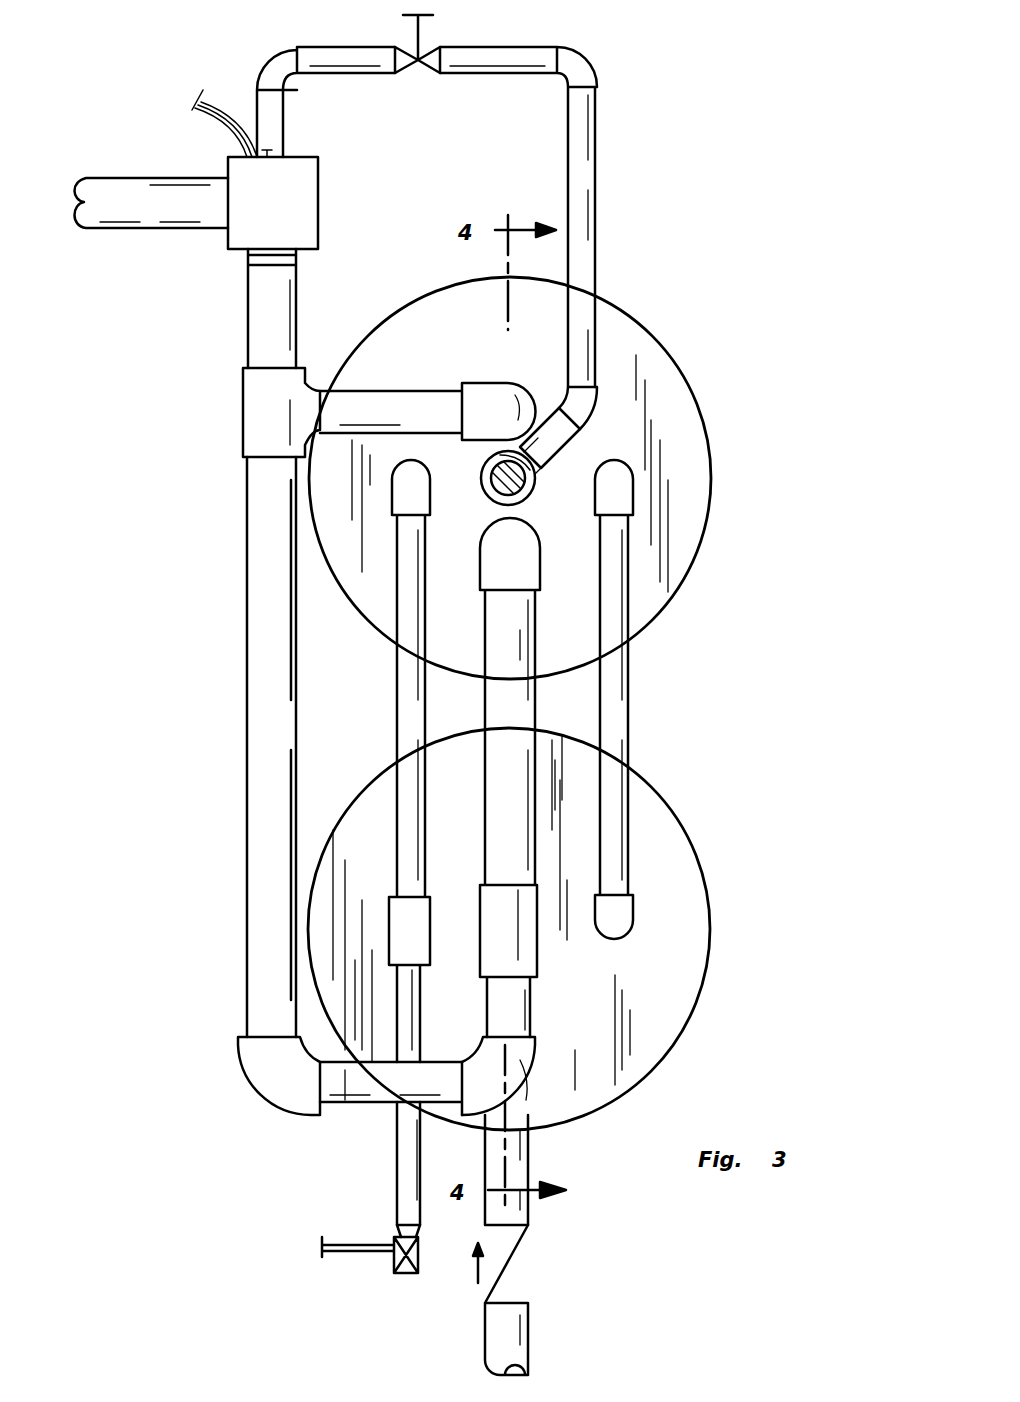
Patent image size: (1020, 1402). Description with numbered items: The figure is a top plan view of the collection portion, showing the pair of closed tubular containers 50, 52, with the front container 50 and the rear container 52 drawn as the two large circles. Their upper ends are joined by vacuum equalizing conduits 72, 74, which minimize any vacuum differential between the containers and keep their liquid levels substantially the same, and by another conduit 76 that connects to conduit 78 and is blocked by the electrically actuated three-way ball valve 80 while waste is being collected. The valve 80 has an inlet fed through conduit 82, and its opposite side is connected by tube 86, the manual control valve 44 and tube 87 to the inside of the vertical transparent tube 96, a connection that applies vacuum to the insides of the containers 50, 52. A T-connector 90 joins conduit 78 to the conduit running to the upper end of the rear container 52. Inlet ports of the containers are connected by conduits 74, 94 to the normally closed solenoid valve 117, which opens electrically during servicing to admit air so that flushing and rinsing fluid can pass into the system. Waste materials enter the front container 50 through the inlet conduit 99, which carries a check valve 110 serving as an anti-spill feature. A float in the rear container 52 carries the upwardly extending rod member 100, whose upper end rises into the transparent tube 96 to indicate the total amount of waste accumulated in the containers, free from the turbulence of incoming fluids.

The manual control valve 44 is at (425, 63).
The closed tubular container 50 is at (704, 866).
The closed tubular container 52 is at (712, 478).
The vacuum equalizing conduit 72 is at (628, 749).
The vacuum equalizing conduit 74 is at (397, 718).
The conduit 76 is at (532, 705).
The conduit 78 is at (247, 745).
The electrically actuated three way ball valve 80 is at (300, 190).
The conduit 82 is at (178, 207).
The tube 86 is at (370, 75).
The tube 87 is at (597, 135).
The T-connector 90 is at (283, 418).
The conduit 94 is at (393, 1172).
The vertical transparent tube 96 is at (480, 468).
The inlet conduit 99 is at (530, 1162).
The upwardly extending rod member 100 is at (520, 500).
The check valve 110 is at (507, 1267).
The solenoid valve 117 is at (385, 1258).